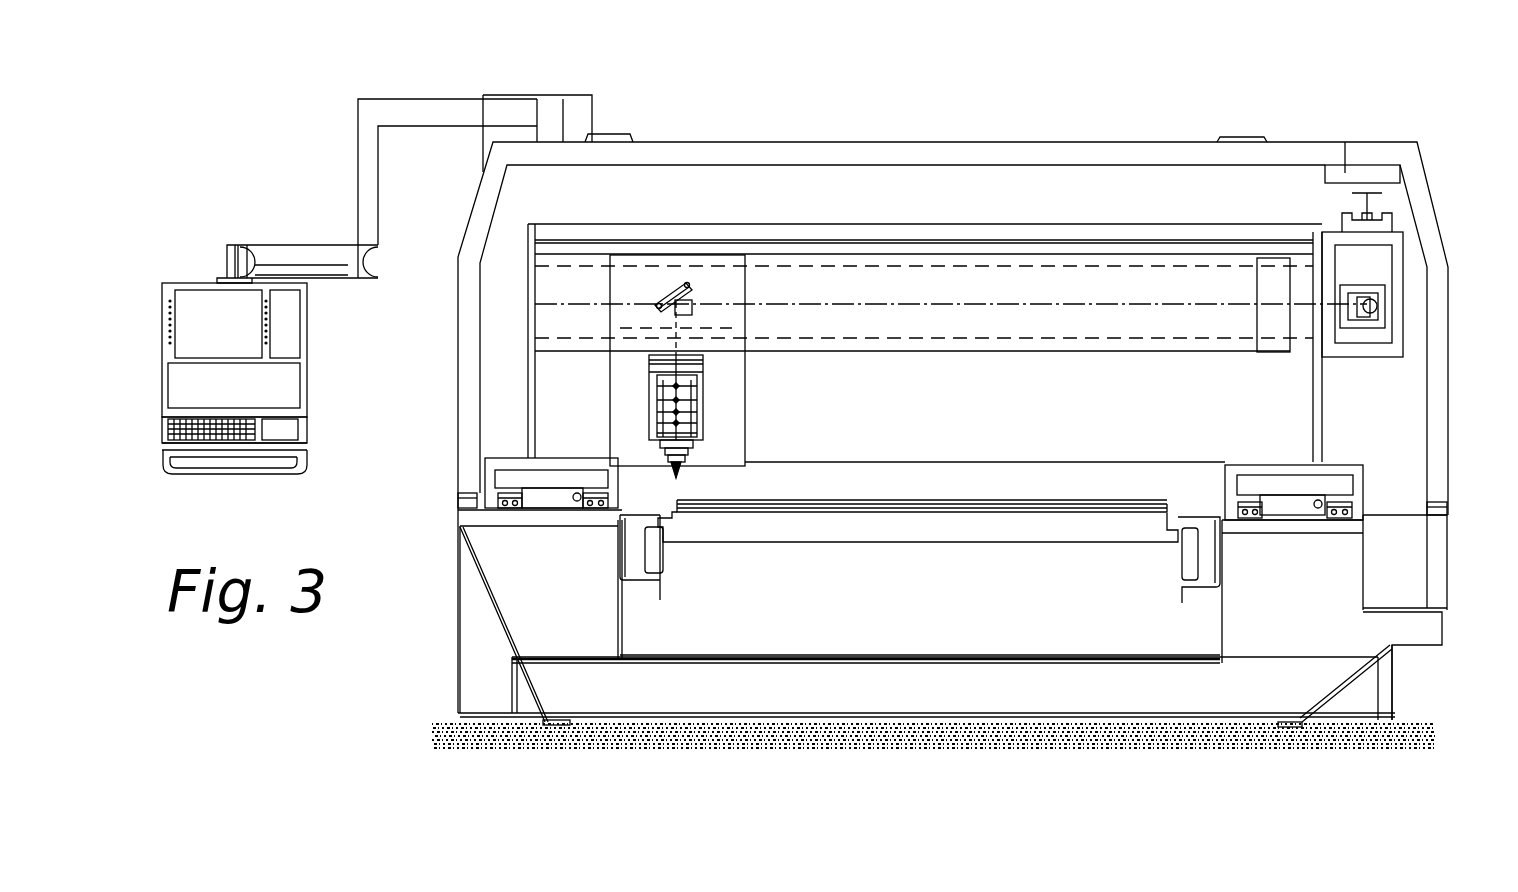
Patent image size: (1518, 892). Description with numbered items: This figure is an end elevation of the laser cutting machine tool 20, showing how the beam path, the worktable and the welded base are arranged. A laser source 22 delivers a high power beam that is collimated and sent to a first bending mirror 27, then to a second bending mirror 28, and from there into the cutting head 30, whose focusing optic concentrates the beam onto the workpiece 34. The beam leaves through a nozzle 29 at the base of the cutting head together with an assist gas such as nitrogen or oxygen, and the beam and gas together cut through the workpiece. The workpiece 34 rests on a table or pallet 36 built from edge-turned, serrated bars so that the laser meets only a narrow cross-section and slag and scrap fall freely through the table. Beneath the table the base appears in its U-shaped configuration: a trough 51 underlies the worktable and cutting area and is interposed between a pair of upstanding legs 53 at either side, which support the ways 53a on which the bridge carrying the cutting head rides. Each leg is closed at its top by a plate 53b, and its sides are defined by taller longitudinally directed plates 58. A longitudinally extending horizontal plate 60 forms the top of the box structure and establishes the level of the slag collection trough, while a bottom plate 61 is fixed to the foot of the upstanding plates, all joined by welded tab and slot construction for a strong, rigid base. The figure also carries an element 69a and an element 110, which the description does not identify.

The machine tool 20 is at (942, 135).
The laser source 22 is at (1028, 304).
The first bending mirror 27 is at (1371, 313).
The second bending mirror 28 is at (692, 296).
The nozzle 29 is at (681, 476).
The cutting head 30 is at (701, 393).
The workpiece 34 is at (948, 502).
The table or pallet 36 is at (1033, 512).
The trough 51 is at (1083, 630).
The upstanding legs 53 is at (502, 583).
The ways 53a is at (593, 512).
The plate 53b is at (478, 490).
The taller longitudinally directed plates 58 is at (461, 631).
The longitudinally extending horizontal plate 60 is at (1013, 663).
The bottom plate 61 is at (440, 743).
The insulation layer 69a is at (765, 655).
The enclosure housing 110 is at (465, 403).